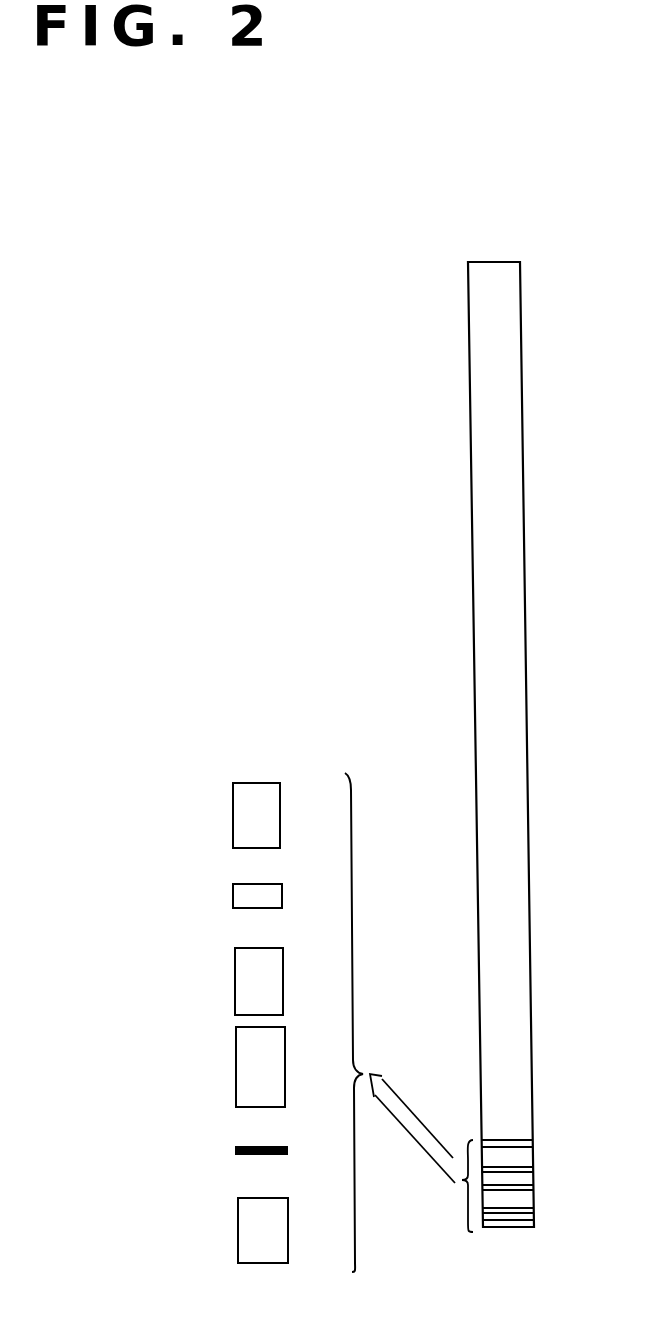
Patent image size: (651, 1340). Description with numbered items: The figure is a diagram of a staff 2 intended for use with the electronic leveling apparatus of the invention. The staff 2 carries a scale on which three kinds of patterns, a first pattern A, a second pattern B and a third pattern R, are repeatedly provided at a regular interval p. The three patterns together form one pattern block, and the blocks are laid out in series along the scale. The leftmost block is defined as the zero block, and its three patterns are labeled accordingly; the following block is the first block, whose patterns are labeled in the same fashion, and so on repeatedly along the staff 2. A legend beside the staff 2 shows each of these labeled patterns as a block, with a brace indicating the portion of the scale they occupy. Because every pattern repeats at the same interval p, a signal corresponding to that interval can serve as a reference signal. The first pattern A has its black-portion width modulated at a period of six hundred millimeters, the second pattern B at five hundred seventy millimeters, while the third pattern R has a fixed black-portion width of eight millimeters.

The staff 2 is at (508, 435).